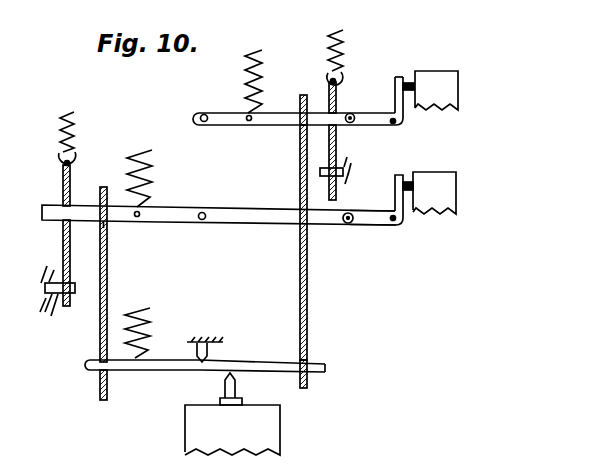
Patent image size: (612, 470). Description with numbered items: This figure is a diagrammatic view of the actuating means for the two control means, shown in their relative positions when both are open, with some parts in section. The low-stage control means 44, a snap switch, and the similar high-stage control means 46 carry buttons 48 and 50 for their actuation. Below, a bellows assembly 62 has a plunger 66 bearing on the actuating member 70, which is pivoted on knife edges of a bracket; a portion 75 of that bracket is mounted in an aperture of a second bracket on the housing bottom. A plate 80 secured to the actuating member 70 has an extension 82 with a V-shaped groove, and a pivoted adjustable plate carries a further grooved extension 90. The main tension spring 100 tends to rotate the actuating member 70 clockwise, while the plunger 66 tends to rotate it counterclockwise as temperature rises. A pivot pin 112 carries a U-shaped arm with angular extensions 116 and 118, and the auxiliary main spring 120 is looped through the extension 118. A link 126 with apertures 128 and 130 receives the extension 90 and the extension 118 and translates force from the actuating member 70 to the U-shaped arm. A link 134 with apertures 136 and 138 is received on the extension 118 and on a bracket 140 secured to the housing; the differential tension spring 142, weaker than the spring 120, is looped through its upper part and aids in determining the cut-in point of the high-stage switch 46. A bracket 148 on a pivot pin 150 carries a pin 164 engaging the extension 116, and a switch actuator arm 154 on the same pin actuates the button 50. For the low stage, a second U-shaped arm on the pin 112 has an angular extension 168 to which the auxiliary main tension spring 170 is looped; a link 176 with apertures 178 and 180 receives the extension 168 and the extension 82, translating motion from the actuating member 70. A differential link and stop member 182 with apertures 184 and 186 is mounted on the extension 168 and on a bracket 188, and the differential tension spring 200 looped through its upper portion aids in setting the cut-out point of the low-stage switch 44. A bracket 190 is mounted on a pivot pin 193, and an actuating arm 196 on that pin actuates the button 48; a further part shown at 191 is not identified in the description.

The low-stage control means 44 is at (444, 91).
The high-stage control means 46 is at (445, 190).
The button 48 is at (408, 83).
The button 50 is at (412, 181).
The bellows assembly 62 is at (295, 431).
The plunger 66 is at (238, 390).
The actuating member 70 is at (163, 374).
The bracket portion 75 is at (210, 350).
The plate 80 is at (264, 362).
The extension 82 is at (322, 372).
The extension 90 is at (87, 361).
The main tension spring 100 is at (150, 313).
The pivot pin 112 is at (203, 211).
The angular extension 116 is at (244, 208).
The angular extension 118 is at (117, 205).
The auxiliary main spring 120 is at (151, 165).
The link 126 is at (99, 324).
The aperture 128 is at (99, 378).
The aperture 130 is at (108, 233).
The link 134 is at (62, 188).
The aperture 136 is at (62, 232).
The aperture 138 is at (64, 280).
The bracket 140 is at (44, 298).
The differential tension spring 142 is at (76, 131).
The bracket 148 is at (380, 230).
The pivot pin 150 is at (396, 220).
The switch actuator arm 154 is at (395, 178).
The pin 164 is at (350, 225).
The angular extension 168 is at (276, 112).
The auxiliary main tension spring 170 is at (263, 64).
The link 176 is at (300, 176).
The aperture 178 is at (300, 133).
The aperture 180 is at (306, 362).
The differential link and stop member 182 is at (338, 139).
The aperture 184 is at (337, 106).
The aperture 186 is at (337, 183).
The bracket 188 is at (326, 170).
The bracket 190 is at (389, 126).
The pivot 191 is at (353, 116).
The pivot pin 193 is at (404, 122).
The actuating arm 196 is at (394, 79).
The differential tension spring 200 is at (343, 37).